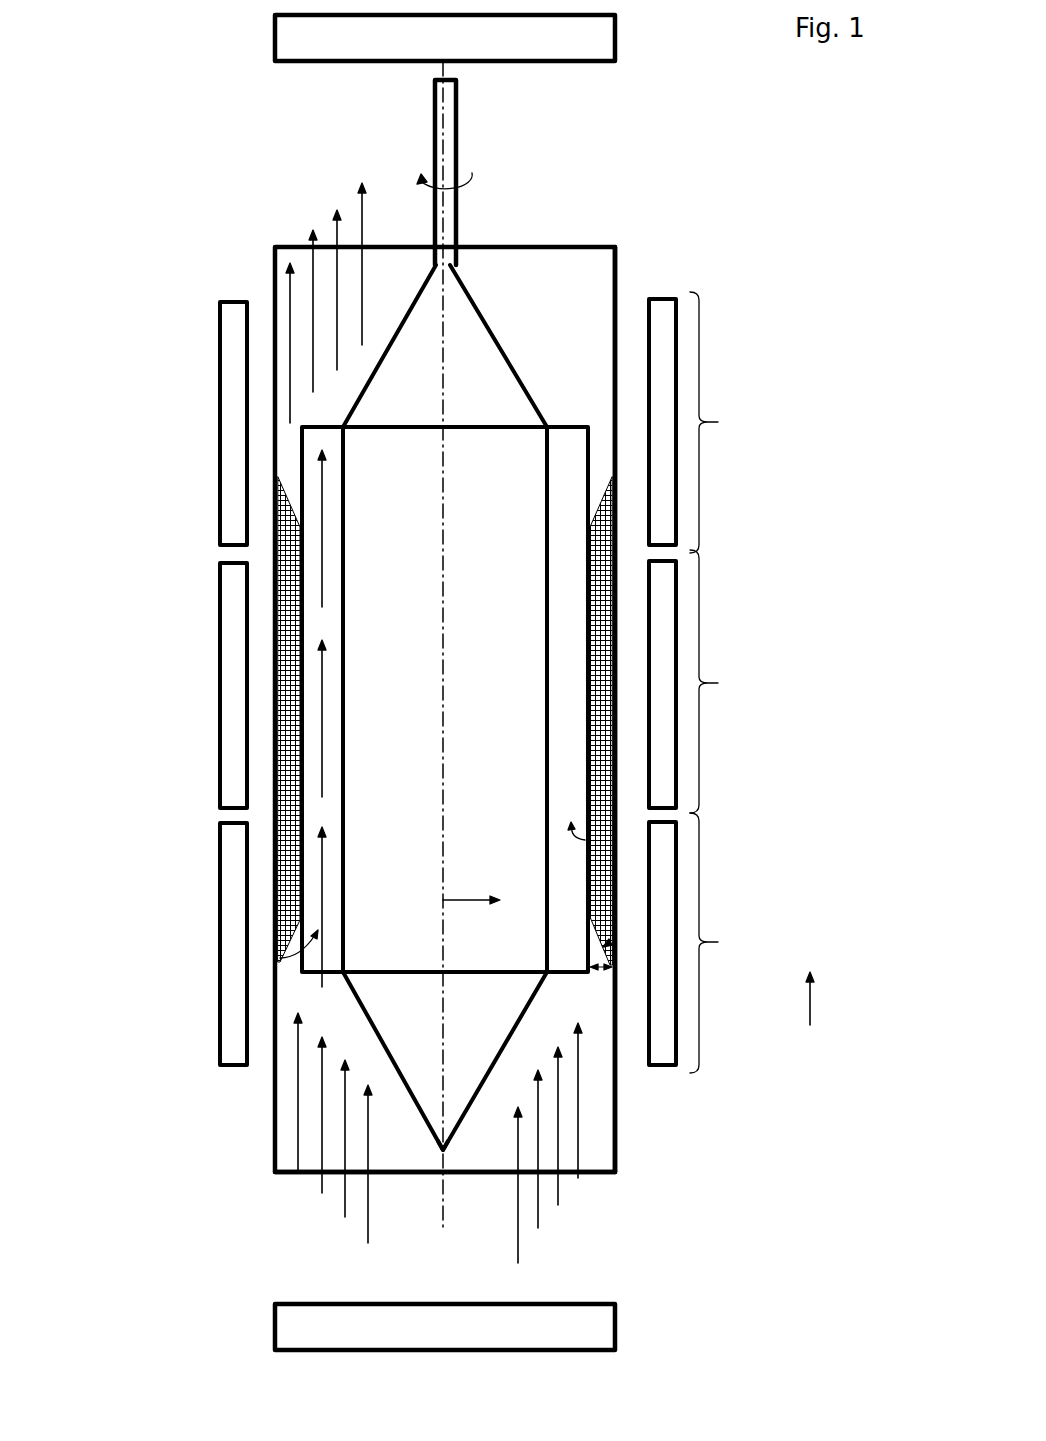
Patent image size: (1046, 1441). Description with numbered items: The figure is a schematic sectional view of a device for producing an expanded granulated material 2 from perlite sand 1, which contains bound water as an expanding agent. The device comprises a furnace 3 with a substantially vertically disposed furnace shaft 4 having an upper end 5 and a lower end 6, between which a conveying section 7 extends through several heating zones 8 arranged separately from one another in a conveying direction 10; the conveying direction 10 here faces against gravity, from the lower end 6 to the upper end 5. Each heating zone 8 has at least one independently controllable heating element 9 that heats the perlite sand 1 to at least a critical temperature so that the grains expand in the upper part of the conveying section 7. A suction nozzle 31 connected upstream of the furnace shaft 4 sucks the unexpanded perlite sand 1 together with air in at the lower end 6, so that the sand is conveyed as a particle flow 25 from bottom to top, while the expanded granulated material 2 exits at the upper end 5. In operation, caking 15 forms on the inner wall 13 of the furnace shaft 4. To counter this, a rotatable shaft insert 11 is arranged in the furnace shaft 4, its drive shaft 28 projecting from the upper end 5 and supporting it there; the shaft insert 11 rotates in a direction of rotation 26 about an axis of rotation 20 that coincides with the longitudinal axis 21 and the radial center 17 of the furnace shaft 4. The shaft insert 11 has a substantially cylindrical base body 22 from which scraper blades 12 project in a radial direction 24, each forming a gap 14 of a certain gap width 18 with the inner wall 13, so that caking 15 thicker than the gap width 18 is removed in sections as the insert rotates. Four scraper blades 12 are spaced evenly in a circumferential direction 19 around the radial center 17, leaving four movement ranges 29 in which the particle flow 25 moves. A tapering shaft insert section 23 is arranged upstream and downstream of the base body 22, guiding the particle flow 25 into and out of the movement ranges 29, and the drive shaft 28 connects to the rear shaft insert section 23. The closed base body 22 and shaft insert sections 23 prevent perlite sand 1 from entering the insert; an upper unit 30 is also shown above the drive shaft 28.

The perlite sand 1 is at (438, 1154).
The expanded granulated material 2 is at (360, 210).
The furnace 3 is at (106, 77).
The furnace shaft 4 is at (546, 317).
The upper end 5 is at (599, 245).
The lower end 6 is at (310, 1174).
The conveying section 7 is at (334, 1108).
The heating zones 8 is at (715, 682).
The heating element 9 is at (662, 357).
The conveying direction 10 is at (812, 1007).
The shaft insert 11 is at (334, 754).
The scraper blade 12 is at (572, 790).
The inner wall 13 is at (613, 1118).
The gap 14 is at (605, 945).
The caking 15 is at (287, 568).
The radial center 17 is at (443, 480).
The gap width 18 is at (601, 968).
The circumferential direction 19 is at (599, 151).
The axis of rotation 20 is at (628, 647).
The longitudinal axis 21 is at (304, 1192).
The base body 22 is at (350, 527).
The shaft insert section 23 is at (316, 754).
The radial direction 24 is at (468, 880).
The particle flow 25 is at (358, 713).
The direction of rotation 26 is at (473, 171).
The drive shaft 28 is at (457, 108).
The movement ranges 29 is at (280, 958).
The upper unit 30 is at (429, 51).
The suction nozzle 31 is at (429, 1339).